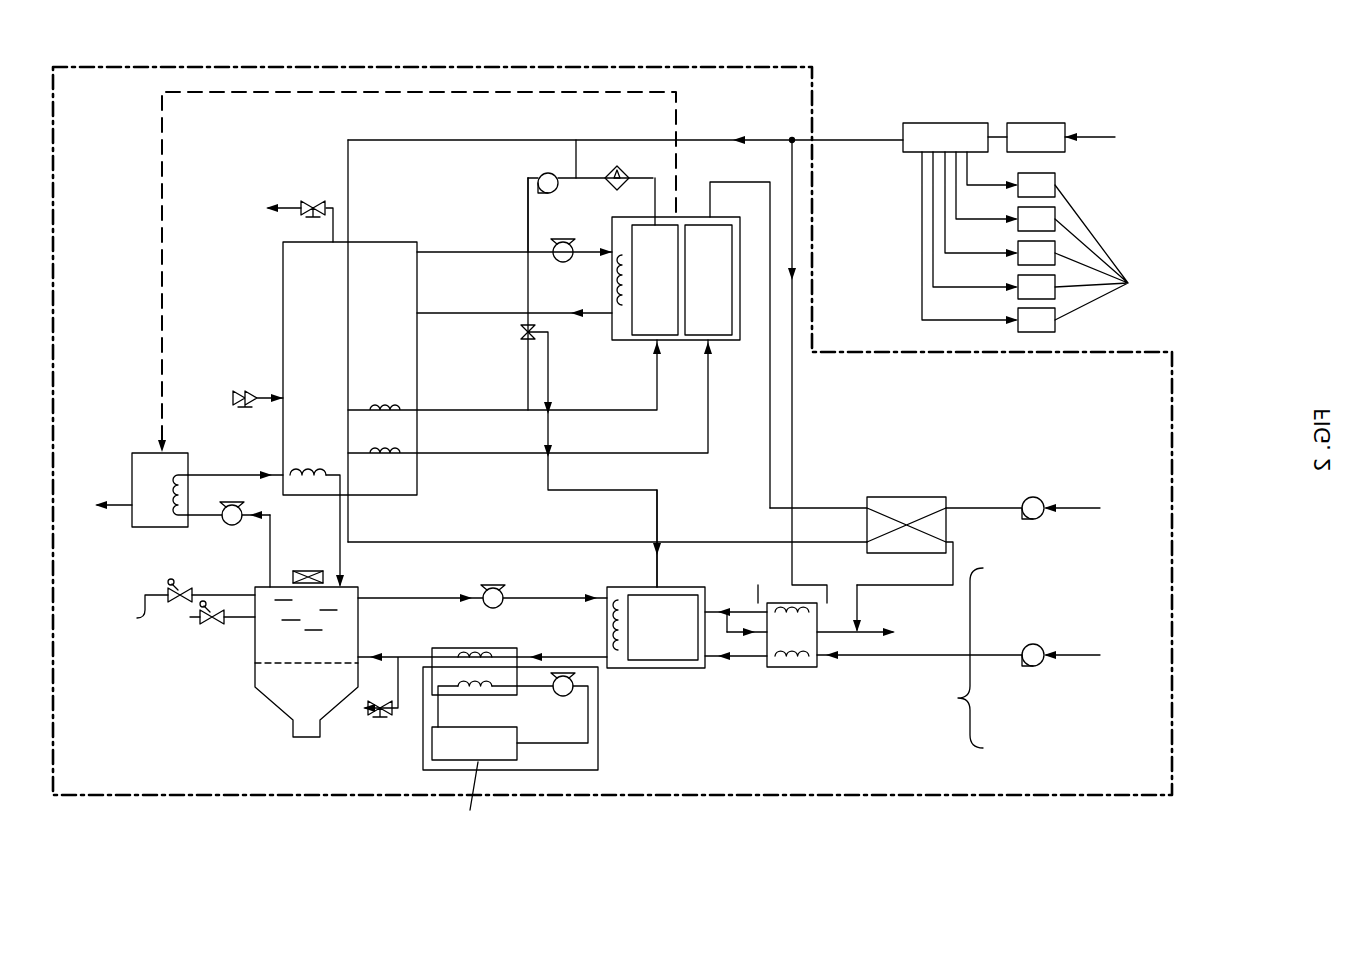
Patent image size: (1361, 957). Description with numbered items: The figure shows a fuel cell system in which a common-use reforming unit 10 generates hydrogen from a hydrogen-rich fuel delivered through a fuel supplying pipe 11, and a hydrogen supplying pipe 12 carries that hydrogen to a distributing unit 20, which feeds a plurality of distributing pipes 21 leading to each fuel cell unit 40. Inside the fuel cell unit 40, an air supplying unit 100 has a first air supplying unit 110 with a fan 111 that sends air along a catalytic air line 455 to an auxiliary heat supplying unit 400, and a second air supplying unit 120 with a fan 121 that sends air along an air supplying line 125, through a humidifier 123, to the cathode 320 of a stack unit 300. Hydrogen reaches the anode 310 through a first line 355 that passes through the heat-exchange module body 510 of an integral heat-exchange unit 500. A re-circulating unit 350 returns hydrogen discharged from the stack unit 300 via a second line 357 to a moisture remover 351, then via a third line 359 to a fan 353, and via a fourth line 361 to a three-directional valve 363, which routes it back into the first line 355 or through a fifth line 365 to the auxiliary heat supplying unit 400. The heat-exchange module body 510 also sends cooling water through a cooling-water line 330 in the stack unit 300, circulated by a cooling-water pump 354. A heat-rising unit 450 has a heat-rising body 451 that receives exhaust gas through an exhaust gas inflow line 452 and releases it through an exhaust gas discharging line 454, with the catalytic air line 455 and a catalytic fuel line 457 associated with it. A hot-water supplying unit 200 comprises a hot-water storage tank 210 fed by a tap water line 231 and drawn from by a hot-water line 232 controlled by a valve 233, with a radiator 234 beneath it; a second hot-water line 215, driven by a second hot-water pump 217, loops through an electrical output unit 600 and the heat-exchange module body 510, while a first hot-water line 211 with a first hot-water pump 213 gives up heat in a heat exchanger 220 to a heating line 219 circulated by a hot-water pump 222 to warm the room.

The common-use reforming unit 10 is at (1035, 123).
The fuel supplying pipe 11 is at (1103, 137).
The hydrogen supplying pipe 12 is at (998, 137).
The distributing unit 20 is at (968, 123).
The distributing pipes 21 is at (922, 192).
The fuel cell unit 40 is at (137, 845).
The air supplying unit 100 is at (951, 658).
The first air supplying unit 110 is at (1036, 662).
The fan 111 is at (1035, 644).
The second air supplying unit 120 is at (1023, 517).
The fan 121 is at (1035, 497).
The humidifier 123 is at (905, 497).
The air supplying line 125 is at (441, 542).
The hot-water supplying unit 200 is at (266, 680).
The hot-water storage tank 210 is at (255, 690).
The first hot-water line 211 is at (416, 655).
The first hot-water pump 213 is at (483, 592).
The second hot-water line 215 is at (268, 562).
The second hot-water pump 217 is at (222, 524).
The heating line 219 is at (423, 745).
The heat exchanger 220 is at (510, 648).
The hot-water pump 222 is at (560, 697).
The tap water line 231 is at (196, 622).
The hot-water line 232 is at (160, 606).
The valve 233 is at (176, 604).
The radiator 234 is at (305, 571).
The stack unit 300 is at (722, 356).
The anode 310 is at (632, 328).
The cathode 320 is at (740, 332).
The cooling-water line 330 is at (425, 252).
The re-circulating unit 350 is at (545, 168).
The moisture remover 351 is at (617, 166).
The fan 353 is at (560, 193).
The cooling-water pump 354 is at (565, 262).
The first line 355 is at (400, 140).
The second line 357 is at (658, 200).
The third line 359 is at (576, 140).
The fourth line 361 is at (528, 287).
The three-directional valve 363 is at (526, 338).
The fifth line 365 is at (657, 520).
The auxiliary heat supplying unit 400 is at (664, 680).
The heat-rising unit 450 is at (766, 678).
The heat-rising body 451 is at (762, 645).
The exhaust gas inflow line 452 is at (728, 612).
The exhaust gas discharging line 454 is at (843, 630).
The catalytic air line 455 is at (820, 668).
The catalytic fuel line 457 is at (790, 583).
The integral heat-exchange unit 500 is at (278, 332).
The heat-exchange module body 510 is at (283, 290).
The electrical output unit 600 is at (122, 535).